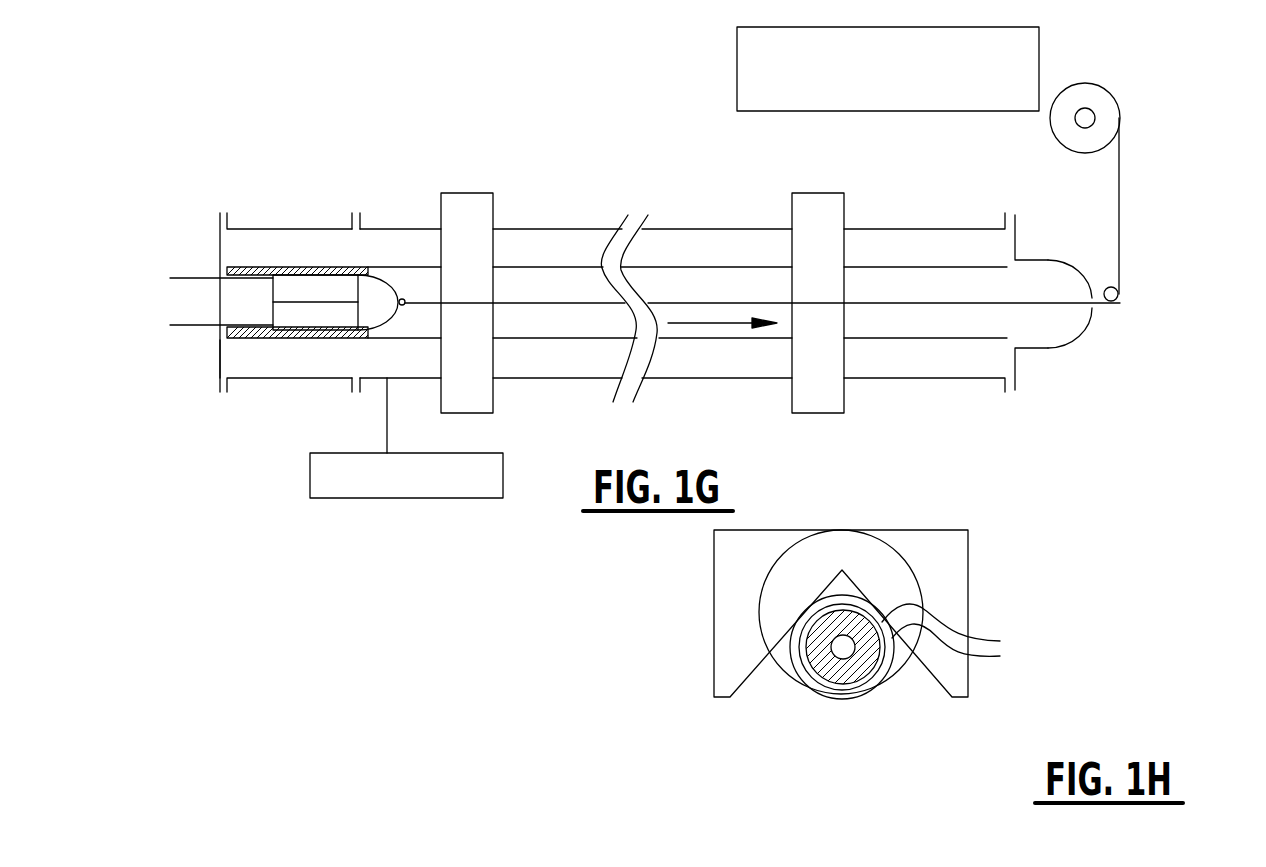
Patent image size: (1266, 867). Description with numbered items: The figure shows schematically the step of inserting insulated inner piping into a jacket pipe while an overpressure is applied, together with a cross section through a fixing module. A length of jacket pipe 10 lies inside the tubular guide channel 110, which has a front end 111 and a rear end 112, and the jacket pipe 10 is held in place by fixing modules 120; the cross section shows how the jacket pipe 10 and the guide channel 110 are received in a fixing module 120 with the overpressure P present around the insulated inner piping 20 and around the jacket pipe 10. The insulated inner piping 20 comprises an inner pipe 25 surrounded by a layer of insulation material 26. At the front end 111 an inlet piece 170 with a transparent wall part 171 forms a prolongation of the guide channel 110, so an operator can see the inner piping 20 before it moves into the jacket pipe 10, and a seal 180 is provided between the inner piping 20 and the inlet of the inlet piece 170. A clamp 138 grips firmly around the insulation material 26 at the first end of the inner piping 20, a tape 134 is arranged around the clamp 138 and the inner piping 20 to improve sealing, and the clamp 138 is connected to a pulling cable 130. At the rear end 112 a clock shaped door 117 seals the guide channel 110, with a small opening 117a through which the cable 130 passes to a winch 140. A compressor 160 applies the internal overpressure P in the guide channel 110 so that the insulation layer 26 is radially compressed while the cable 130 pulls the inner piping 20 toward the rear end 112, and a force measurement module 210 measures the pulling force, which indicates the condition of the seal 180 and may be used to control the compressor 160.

In FIG. 1G, the jacket pipe 10 is at (752, 267).
In FIG. 1H, the jacket pipe 10 is at (880, 665).
In FIG. 1G, the insulated inner piping 20 is at (203, 278).
In FIG. 1H, the insulated inner piping 20 is at (805, 702).
In FIG. 1H, the inner pipe 25 is at (840, 659).
In FIG. 1H, the layer of insulation material 26 is at (852, 657).
In FIG. 1G, the guide channel 110 is at (717, 229).
In FIG. 1H, the guide channel 110 is at (778, 665).
In FIG. 1G, the front end 111 is at (190, 210).
In FIG. 1G, the rear end 112 is at (1040, 217).
In FIG. 1G, the clock shaped door 117 is at (1015, 376).
In FIG. 1G, the small opening 117a is at (1108, 260).
In FIG. 1G, the fixing module 120 is at (470, 198).
In FIG. 1H, the fixing module 120 is at (1004, 556).
In FIG. 1G, the pulling cable 130 is at (580, 303).
In FIG. 1G, the tape 134 is at (267, 273).
In FIG. 1G, the clamp 138 is at (334, 262).
In FIG. 1G, the winch 140 is at (1098, 95).
In FIG. 1G, the compressor 160 is at (483, 495).
In FIG. 1G, the inlet piece 170 is at (250, 228).
In FIG. 1G, the transparent wall part 171 is at (287, 378).
In FIG. 1G, the seal 180 is at (218, 360).
In FIG. 1G, the force measurement module 210 is at (737, 90).
In FIG. 1G, the overpressure P is at (669, 344).
In FIG. 1H, the overpressure P is at (954, 635).